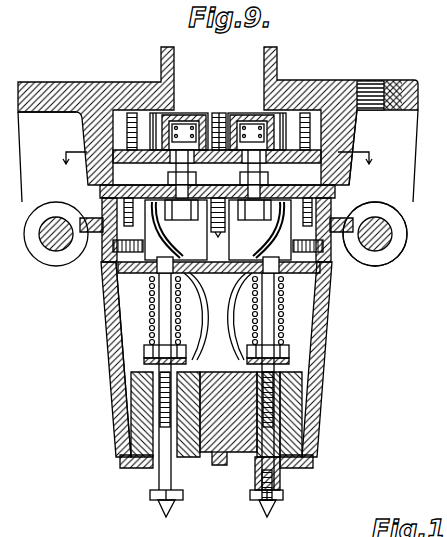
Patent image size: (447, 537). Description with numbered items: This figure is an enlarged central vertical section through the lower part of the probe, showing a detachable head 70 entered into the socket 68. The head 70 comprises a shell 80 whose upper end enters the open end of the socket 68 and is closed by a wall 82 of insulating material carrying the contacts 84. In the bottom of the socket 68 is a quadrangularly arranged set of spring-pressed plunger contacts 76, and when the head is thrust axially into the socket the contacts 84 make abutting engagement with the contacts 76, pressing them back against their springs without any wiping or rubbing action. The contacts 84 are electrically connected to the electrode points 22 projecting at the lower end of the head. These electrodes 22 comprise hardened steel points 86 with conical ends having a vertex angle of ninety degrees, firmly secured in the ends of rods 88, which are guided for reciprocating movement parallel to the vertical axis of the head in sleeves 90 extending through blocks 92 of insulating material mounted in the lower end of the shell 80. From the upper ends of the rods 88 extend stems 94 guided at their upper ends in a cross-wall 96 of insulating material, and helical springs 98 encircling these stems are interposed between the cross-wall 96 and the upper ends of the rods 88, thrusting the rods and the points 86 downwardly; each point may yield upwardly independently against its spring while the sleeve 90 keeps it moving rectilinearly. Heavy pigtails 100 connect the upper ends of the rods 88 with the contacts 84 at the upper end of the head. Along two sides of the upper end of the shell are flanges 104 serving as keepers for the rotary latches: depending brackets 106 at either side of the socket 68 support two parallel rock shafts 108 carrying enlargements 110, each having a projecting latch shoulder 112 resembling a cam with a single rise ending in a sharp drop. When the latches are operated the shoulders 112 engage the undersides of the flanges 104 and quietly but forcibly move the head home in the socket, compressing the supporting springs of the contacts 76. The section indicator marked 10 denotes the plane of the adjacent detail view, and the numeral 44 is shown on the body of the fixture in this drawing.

The depending brackets 106 is at (56, 137).
The housing body 44 is at (118, 92).
The socket 68 is at (340, 157).
The section indicator 10 is at (216, 167).
The pigtails 100 is at (404, 176).
The flanges 104 is at (86, 216).
The rock shafts 108 is at (42, 245).
The enlargements 110 is at (389, 260).
The latch shoulder 112 is at (88, 252).
The spring-pressed plunger contacts 76 is at (170, 177).
The contacts 84 is at (245, 176).
The wall 82 is at (217, 218).
The cross-wall 96 is at (108, 290).
The head 70 is at (337, 288).
The shell 80 is at (114, 355).
The blocks 92 is at (122, 380).
The sleeves 90 is at (122, 414).
The rods 88 is at (165, 440).
The stems 94 is at (160, 301).
The helical springs 98 is at (158, 325).
The hardened steel points 86 is at (170, 508).
The electrode points 22 is at (253, 480).